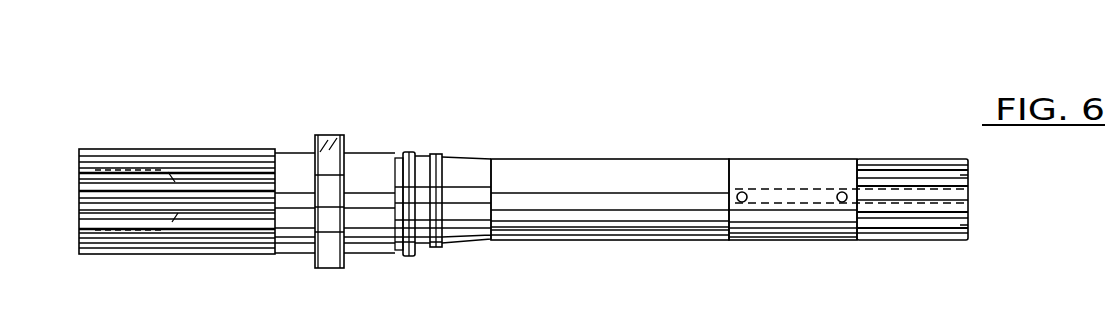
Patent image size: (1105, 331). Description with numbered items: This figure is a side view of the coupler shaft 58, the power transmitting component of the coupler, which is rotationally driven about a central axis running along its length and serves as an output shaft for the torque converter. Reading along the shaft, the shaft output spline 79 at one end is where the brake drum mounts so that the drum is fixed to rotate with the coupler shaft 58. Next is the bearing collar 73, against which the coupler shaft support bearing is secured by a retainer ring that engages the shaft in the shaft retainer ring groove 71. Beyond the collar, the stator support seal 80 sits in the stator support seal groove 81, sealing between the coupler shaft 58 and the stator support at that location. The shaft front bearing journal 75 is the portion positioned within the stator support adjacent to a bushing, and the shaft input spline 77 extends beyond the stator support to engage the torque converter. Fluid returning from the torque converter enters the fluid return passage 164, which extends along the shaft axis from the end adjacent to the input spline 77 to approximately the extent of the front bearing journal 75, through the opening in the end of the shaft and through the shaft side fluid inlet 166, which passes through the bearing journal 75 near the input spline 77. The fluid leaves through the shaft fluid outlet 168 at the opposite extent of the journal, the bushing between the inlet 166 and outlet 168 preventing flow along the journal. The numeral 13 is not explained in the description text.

The housing 13 is at (1078, 330).
The coupler shaft 58 is at (590, 240).
The shaft retainer ring groove 71 is at (397, 257).
The bearing collar 73 is at (325, 268).
The shaft front bearing journal 75 is at (765, 240).
The shaft input spline 77 is at (893, 240).
The shaft output spline 79 is at (203, 253).
The stator support seal 80 is at (436, 190).
The stator support seal groove 81 is at (430, 190).
The fluid return passage 164 is at (972, 198).
The shaft side fluid inlet 166 is at (842, 192).
The shaft fluid outlet 168 is at (742, 192).